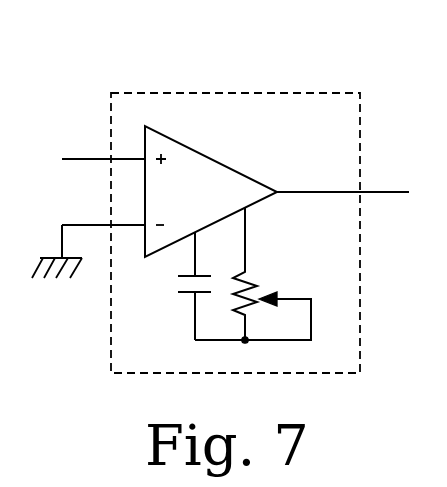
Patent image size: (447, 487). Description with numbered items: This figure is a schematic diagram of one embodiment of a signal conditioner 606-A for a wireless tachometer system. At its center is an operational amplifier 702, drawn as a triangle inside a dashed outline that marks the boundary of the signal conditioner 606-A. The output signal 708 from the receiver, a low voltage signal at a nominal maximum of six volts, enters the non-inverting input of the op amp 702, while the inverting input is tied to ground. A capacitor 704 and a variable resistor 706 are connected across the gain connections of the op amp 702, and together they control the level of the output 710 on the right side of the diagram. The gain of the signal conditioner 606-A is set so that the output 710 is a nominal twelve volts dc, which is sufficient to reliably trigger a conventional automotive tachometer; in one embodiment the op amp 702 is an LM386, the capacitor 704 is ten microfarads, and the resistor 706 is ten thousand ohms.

The signal conditioner 606-A is at (182, 93).
The operational amplifier 702 is at (227, 168).
The capacitor 704 is at (182, 292).
The variable resistor 706 is at (250, 272).
The output signal 708 is at (86, 157).
The output 710 is at (377, 191).